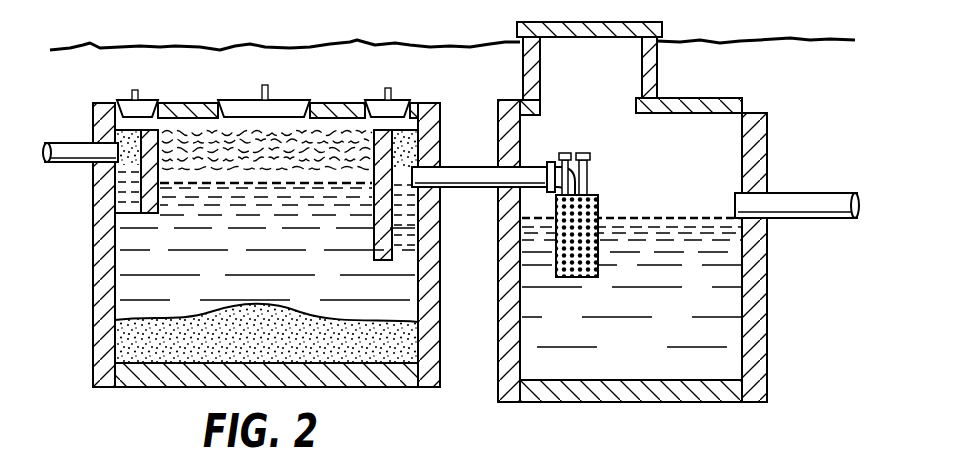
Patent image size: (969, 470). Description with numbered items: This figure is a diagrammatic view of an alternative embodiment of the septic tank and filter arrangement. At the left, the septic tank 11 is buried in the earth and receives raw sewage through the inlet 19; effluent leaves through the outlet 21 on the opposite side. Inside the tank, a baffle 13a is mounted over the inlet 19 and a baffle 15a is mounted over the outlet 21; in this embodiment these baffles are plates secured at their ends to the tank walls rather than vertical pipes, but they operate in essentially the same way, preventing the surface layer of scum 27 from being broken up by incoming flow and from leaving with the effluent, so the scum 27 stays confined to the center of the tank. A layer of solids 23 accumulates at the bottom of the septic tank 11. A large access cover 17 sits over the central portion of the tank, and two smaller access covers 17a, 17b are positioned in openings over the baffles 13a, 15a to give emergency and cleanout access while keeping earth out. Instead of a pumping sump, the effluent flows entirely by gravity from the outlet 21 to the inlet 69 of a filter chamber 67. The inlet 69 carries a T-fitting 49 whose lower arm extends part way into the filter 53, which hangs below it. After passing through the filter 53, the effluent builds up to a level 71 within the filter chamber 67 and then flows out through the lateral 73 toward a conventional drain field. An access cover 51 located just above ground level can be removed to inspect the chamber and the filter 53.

The septic tank 11 is at (92, 257).
The baffle 13a is at (128, 170).
The baffle 15a is at (413, 147).
The access cover 17 is at (290, 100).
The access cover 17a is at (147, 100).
The access cover 17b is at (400, 100).
The inlet 19 is at (80, 143).
The outlet 21 is at (445, 188).
The layer of solids 23 is at (333, 347).
The scum 27 is at (333, 165).
The T-fitting 49 is at (600, 158).
The access cover 51 is at (665, 23).
The filter 53 is at (600, 205).
The filter chamber 67 is at (768, 268).
The inlet 69 is at (502, 163).
The level 71 is at (715, 216).
The lateral 73 is at (780, 195).